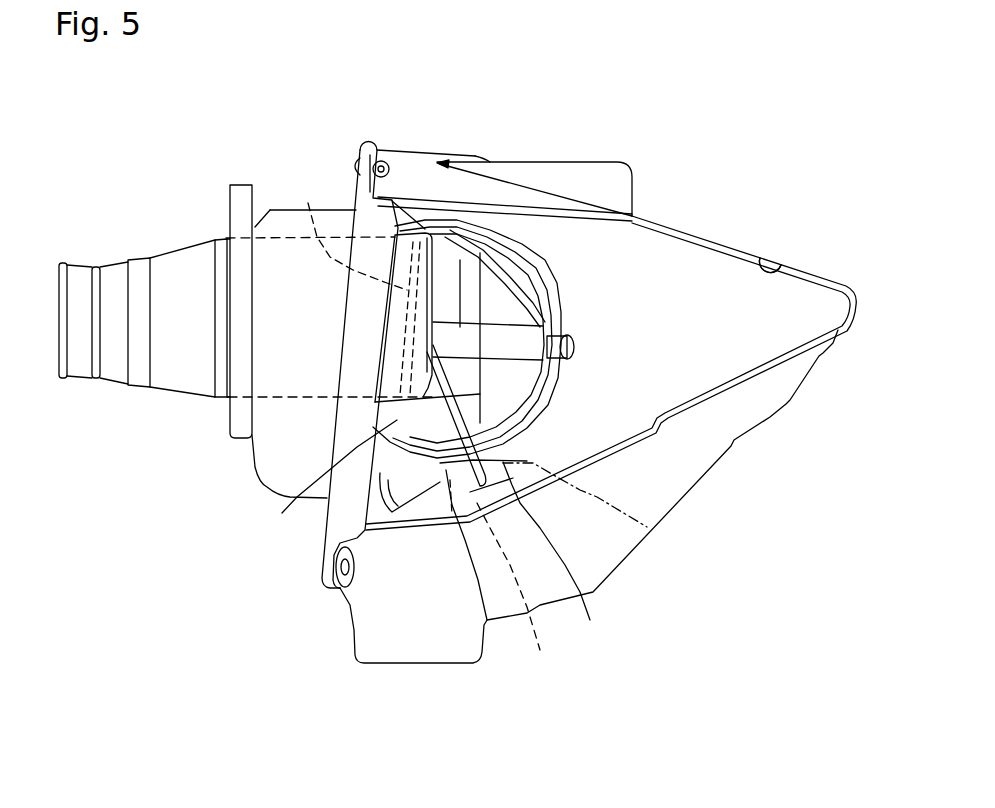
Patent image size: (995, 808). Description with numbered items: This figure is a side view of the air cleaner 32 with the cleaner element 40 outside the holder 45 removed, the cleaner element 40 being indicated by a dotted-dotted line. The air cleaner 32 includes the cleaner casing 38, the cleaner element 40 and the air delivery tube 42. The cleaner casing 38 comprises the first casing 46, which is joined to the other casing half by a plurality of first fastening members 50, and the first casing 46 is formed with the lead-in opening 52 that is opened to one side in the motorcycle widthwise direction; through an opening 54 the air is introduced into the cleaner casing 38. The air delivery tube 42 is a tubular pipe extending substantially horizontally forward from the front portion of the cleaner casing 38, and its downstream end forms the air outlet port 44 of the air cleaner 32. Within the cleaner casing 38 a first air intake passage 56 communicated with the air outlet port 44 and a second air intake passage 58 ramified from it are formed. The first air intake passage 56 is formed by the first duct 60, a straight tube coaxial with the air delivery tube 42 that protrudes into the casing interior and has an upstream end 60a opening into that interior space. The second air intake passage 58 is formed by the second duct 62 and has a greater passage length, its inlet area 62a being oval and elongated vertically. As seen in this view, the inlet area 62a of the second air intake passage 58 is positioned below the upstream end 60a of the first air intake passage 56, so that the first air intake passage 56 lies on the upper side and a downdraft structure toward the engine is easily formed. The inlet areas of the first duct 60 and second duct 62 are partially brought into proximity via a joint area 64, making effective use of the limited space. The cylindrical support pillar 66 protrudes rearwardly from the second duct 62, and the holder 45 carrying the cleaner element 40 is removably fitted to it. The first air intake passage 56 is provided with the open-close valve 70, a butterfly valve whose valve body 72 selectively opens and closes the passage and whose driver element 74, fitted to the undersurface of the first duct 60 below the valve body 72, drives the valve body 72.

The air cleaner 32 is at (705, 148).
The cleaner casing 38 is at (358, 135).
The cleaner element 40 is at (647, 527).
The air delivery tube 42 is at (162, 270).
The air outlet port 44 is at (60, 297).
The holder 45 is at (545, 248).
The first casing 46 is at (273, 208).
The first fastening member 50 is at (357, 163).
The lead-in opening 52 is at (781, 263).
The opening 54 is at (770, 265).
The first air intake passage 56 is at (268, 451).
The second air intake passage 58 is at (514, 592).
The first duct 60 is at (408, 232).
The upstream end 60a is at (495, 267).
The second duct 62 is at (487, 622).
The inlet area 62a is at (562, 559).
The joint area 64 is at (434, 567).
The support pillar 66 is at (485, 302).
The open-close valve 70 is at (342, 365).
The valve body 72 is at (349, 231).
The driver element 74 is at (334, 484).